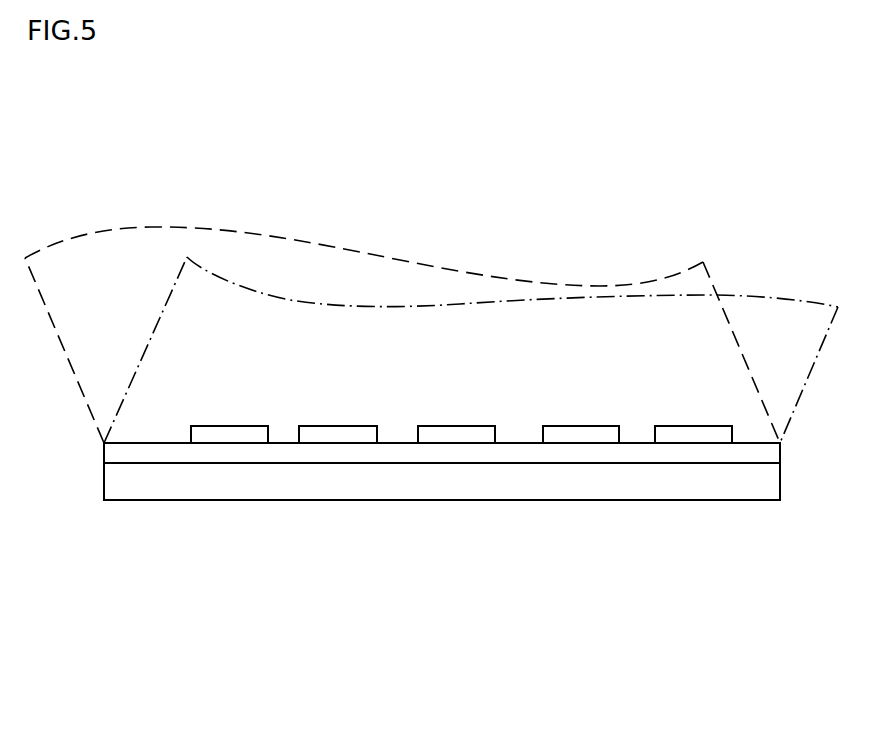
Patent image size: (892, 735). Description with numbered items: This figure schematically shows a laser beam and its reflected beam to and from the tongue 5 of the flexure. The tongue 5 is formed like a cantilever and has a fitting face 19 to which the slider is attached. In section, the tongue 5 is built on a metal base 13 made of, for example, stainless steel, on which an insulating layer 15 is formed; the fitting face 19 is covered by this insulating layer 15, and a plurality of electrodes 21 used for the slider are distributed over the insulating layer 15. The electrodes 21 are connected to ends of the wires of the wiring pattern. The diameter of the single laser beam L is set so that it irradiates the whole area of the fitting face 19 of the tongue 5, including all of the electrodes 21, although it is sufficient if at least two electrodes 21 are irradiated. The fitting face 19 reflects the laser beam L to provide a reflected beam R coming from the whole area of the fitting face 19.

The tongue 5 is at (381, 505).
The metal base 13 is at (491, 483).
The insulating layer 15 is at (133, 455).
The fitting face 19 is at (507, 423).
The electrodes 21 is at (236, 425).
The laser beam L is at (327, 254).
The reflected beam R is at (794, 307).